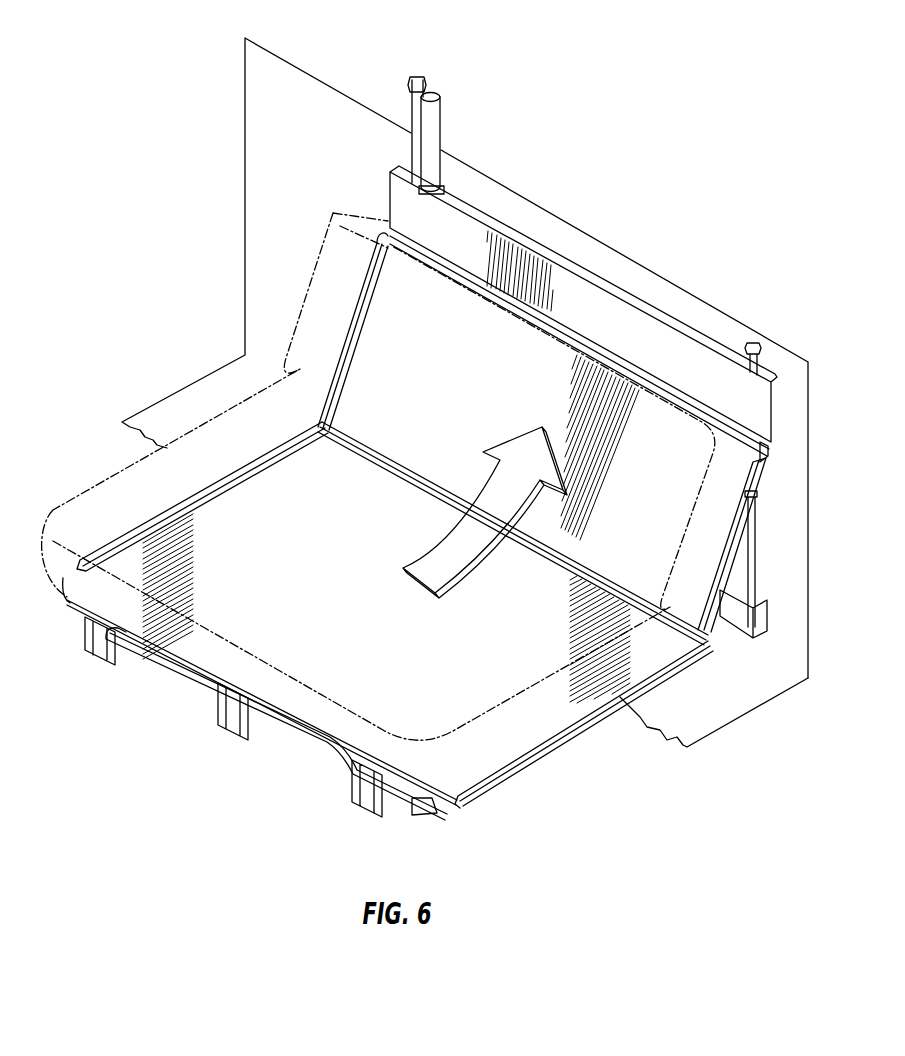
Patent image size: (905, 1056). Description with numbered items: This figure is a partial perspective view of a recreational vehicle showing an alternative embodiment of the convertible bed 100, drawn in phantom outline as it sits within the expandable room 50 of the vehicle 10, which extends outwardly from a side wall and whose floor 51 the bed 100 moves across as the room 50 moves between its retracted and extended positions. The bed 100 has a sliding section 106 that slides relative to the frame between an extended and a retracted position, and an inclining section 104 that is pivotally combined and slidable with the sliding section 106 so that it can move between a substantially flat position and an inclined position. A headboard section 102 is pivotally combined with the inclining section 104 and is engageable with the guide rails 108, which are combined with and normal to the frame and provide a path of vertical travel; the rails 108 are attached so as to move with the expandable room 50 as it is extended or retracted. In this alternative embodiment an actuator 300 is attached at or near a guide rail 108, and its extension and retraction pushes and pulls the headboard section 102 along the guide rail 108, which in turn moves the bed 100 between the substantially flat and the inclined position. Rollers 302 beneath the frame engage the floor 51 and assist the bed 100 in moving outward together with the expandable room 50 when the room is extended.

The vehicle seat 10 is at (305, 305).
The expandable room 50 is at (247, 37).
The floor 51 is at (693, 731).
The convertible bed 100 is at (576, 174).
The headboard section 102 is at (775, 400).
The inclining section 104 is at (769, 471).
The sliding section 106 is at (649, 688).
The guide rail 108 is at (430, 80).
The actuator 300 is at (434, 117).
The roller 302 is at (428, 821).